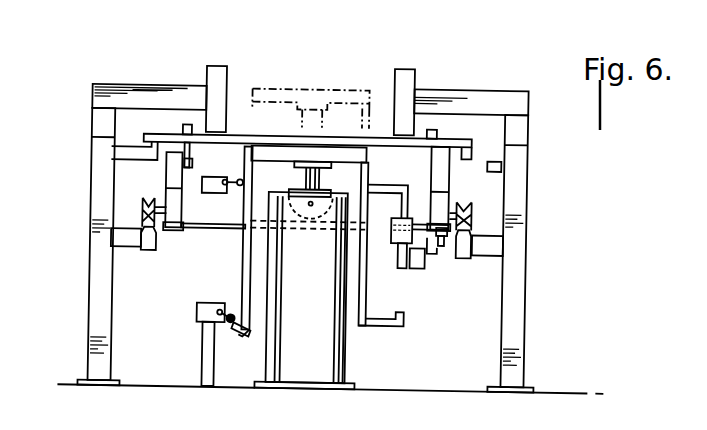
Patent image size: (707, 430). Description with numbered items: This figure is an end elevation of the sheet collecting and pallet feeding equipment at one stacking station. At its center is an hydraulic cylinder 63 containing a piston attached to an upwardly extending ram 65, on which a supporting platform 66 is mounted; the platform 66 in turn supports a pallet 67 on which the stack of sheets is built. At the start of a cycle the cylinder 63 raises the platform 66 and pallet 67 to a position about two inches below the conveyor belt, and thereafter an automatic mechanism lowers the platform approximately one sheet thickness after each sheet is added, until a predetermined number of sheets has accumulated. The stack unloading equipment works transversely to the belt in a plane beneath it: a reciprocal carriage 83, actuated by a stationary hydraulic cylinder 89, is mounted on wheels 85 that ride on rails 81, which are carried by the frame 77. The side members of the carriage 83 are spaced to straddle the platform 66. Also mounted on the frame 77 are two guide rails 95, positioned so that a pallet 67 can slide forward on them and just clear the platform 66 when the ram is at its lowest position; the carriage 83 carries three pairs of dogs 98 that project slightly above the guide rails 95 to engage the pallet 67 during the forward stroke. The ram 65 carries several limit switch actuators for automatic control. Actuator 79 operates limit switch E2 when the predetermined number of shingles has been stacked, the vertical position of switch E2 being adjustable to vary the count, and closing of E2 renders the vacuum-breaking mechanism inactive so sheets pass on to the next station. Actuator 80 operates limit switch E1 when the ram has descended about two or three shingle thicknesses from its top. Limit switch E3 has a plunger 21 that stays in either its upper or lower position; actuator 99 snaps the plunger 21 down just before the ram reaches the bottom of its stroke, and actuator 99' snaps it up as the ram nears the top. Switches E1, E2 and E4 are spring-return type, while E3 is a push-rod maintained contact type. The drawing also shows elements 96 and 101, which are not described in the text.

The frame 77 is at (89, 322).
The hydraulic cylinder 96 is at (217, 73).
The supporting platform 66 is at (310, 88).
The pallet 67 is at (256, 134).
The dogs 98 is at (181, 129).
The stop 101 is at (191, 165).
The guide rails 95 is at (112, 158).
The reciprocal carriage 83 is at (444, 182).
The limit switch E1 is at (212, 198).
The wheels 85 is at (144, 202).
The rails 81 is at (150, 255).
The actuator 80 is at (240, 242).
The limit switch E2 is at (209, 303).
The actuator 79 is at (235, 335).
The ram 65 is at (295, 168).
The stationary hydraulic cylinder 89 is at (292, 193).
The hydraulic cylinder 63 is at (296, 264).
The actuator 99 is at (387, 187).
The actuator 99' is at (400, 323).
The limit switch E3 is at (397, 217).
The plunger 21 is at (398, 262).
The limit switch E4 is at (420, 255).